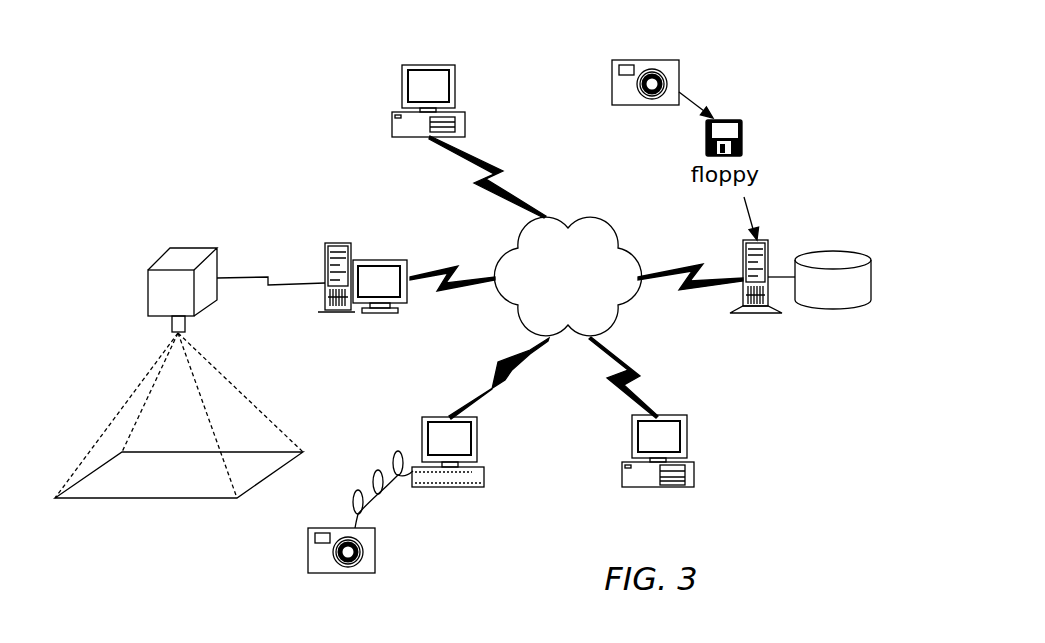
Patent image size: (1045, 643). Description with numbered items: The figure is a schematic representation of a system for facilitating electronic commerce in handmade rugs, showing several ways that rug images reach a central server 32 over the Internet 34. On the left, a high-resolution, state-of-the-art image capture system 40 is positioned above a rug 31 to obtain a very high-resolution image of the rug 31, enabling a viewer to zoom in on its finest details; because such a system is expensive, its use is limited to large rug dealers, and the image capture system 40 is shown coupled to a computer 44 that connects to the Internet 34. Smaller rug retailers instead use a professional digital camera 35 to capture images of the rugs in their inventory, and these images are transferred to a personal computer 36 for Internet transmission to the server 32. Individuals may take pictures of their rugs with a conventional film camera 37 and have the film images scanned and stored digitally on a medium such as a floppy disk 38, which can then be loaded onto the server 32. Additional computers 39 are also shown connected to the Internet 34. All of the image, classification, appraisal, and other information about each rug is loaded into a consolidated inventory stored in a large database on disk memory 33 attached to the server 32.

The rug 31 is at (68, 499).
The server 32 is at (770, 248).
The disk memory 33 is at (871, 277).
The Internet 34 is at (588, 216).
The professional digital camera 35 is at (375, 550).
The personal computer 36 is at (484, 469).
The conventional film camera 37 is at (612, 83).
The floppy disk 38 is at (742, 137).
The computer 39 is at (390, 118).
The image capture system 40 is at (177, 247).
The computer 44 is at (333, 242).